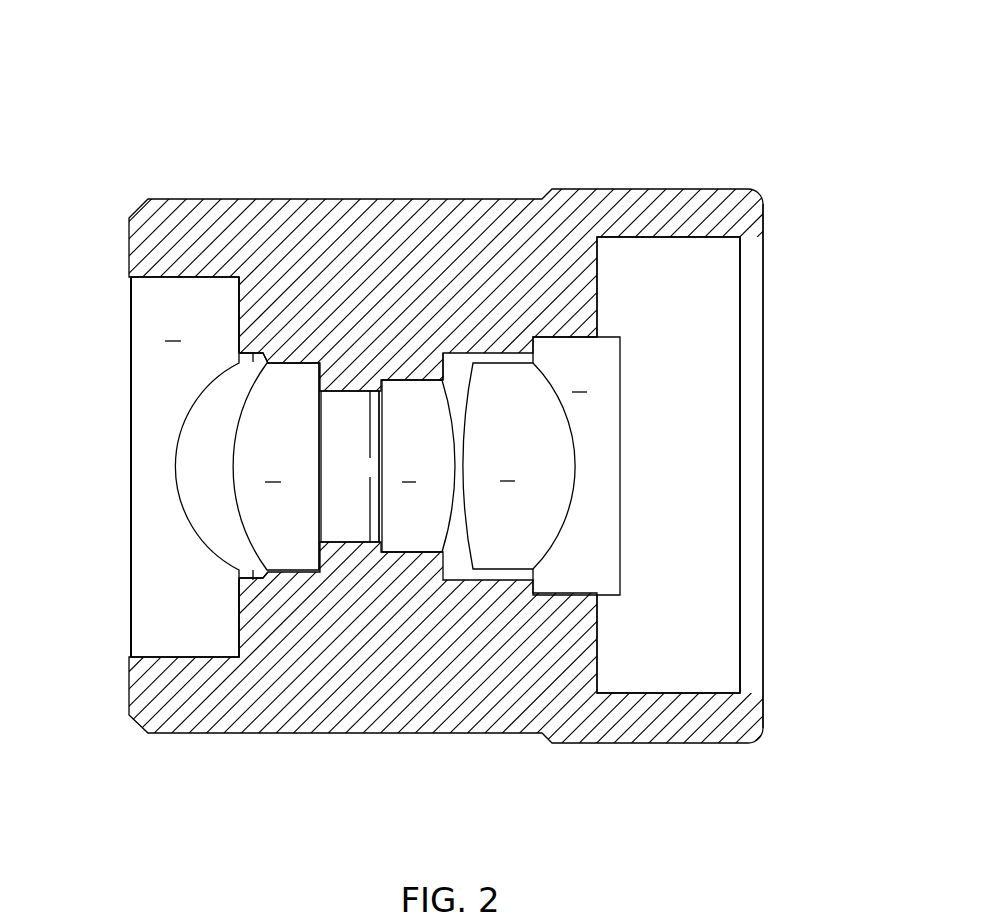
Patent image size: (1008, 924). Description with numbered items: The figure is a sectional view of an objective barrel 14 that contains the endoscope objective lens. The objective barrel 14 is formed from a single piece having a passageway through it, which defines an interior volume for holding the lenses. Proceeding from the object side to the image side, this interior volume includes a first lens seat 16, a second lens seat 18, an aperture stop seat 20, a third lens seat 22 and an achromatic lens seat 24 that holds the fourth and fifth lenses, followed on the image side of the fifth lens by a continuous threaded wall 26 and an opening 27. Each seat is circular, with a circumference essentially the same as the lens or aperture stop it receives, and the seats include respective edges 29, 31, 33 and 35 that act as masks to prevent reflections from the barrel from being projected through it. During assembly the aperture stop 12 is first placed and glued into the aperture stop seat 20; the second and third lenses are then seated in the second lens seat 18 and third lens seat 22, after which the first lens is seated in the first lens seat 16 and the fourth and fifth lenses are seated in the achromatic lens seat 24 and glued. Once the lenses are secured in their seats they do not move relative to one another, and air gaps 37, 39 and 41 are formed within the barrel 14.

The aperture stop 12 is at (370, 433).
The objective barrel 14 is at (486, 100).
The first lens seat 16 is at (140, 277).
The second lens seat 18 is at (302, 365).
The aperture stop seat 20 is at (352, 392).
The third lens seat 22 is at (405, 380).
The achromatic lens seat 24 is at (575, 337).
The continuous threaded wall 26 is at (677, 237).
The opening 27 is at (830, 442).
The edge 29 is at (239, 340).
The edge 31 is at (321, 380).
The edge 33 is at (400, 553).
The edge 35 is at (443, 356).
The air gap 37 is at (253, 357).
The air gap 39 is at (331, 483).
The air gap 41 is at (473, 363).